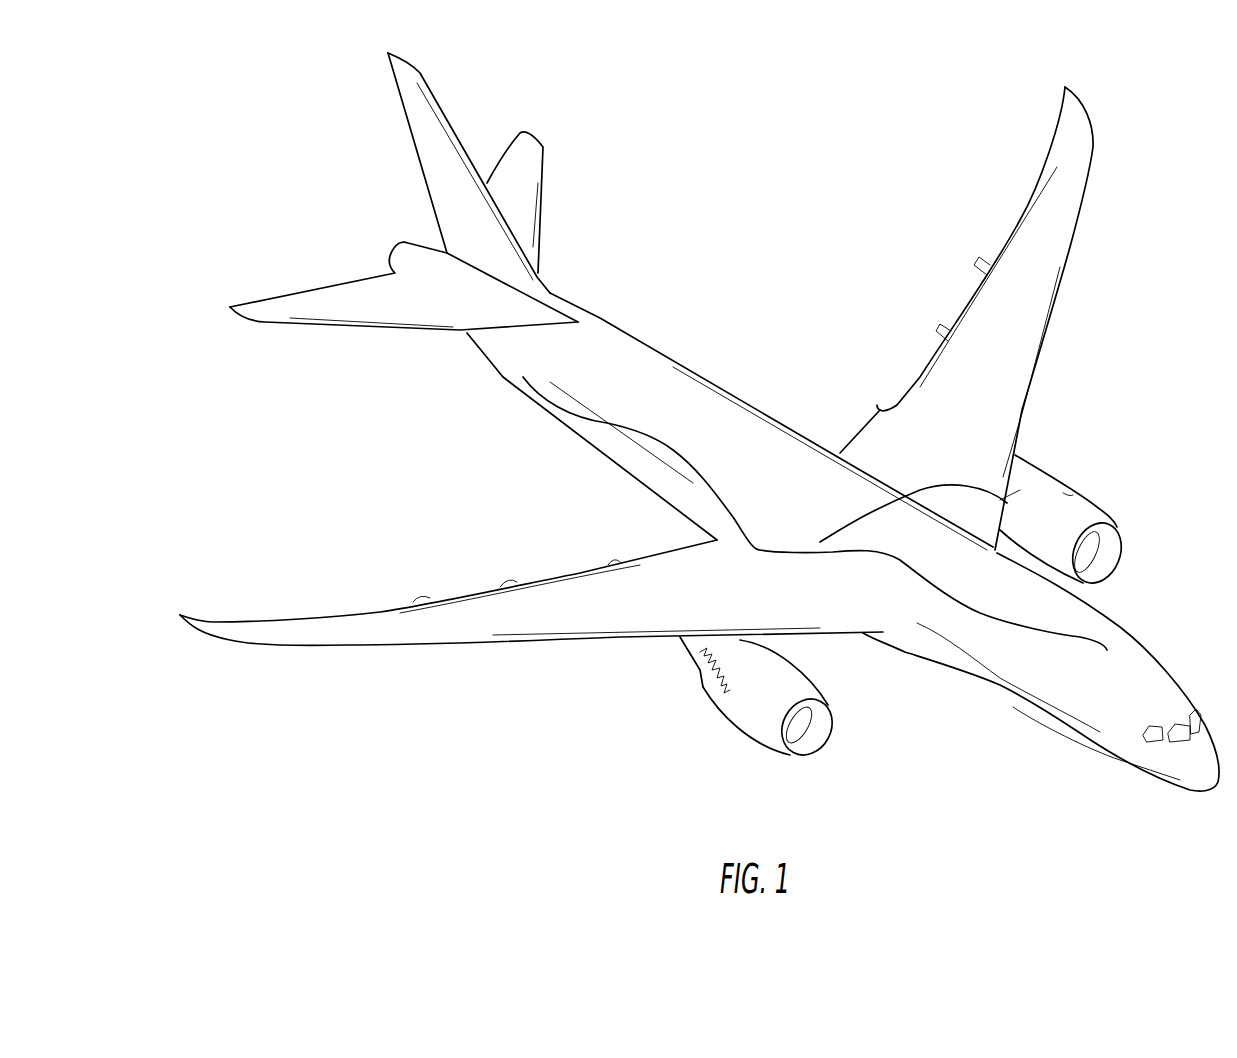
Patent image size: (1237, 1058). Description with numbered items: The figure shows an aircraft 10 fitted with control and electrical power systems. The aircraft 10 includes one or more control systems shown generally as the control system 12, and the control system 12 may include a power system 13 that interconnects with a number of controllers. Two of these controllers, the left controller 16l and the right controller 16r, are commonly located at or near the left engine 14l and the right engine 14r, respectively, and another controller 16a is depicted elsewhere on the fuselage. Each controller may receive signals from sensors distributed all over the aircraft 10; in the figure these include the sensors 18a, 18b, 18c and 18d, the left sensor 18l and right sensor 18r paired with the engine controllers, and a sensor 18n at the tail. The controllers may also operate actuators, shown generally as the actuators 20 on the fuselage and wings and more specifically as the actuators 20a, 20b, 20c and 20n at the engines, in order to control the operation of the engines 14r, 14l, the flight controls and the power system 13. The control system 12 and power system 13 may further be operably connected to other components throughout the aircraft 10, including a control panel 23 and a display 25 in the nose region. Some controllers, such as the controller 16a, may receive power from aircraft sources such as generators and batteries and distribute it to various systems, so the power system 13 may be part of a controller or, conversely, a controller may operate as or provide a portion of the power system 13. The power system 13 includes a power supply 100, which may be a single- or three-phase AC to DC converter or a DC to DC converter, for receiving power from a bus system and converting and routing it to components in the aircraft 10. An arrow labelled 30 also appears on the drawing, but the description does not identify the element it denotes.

The aircraft 10 is at (338, 745).
The control system 12 is at (735, 445).
The power system 13 is at (707, 432).
The power supply 100 is at (806, 443).
The wing root fairing 30 is at (660, 453).
The left engine 14l is at (1052, 477).
The right engine 14r is at (810, 677).
The controller 16a is at (771, 489).
The left controller 16l is at (1028, 547).
The right controller 16r is at (744, 724).
The sensor 18a is at (820, 740).
The sensor 18b is at (833, 718).
The sensor 18c is at (1107, 507).
The sensor 18d is at (735, 667).
The left sensor 18l is at (1028, 513).
The sensor 18n is at (509, 340).
The right sensor 18r is at (744, 692).
The actuator 20 is at (512, 371).
The actuator 20a is at (782, 753).
The actuator 20b is at (807, 757).
The actuator 20c is at (1100, 580).
The actuator 20n is at (1120, 552).
The control panel 23 is at (1099, 709).
The display 25 is at (1099, 677).